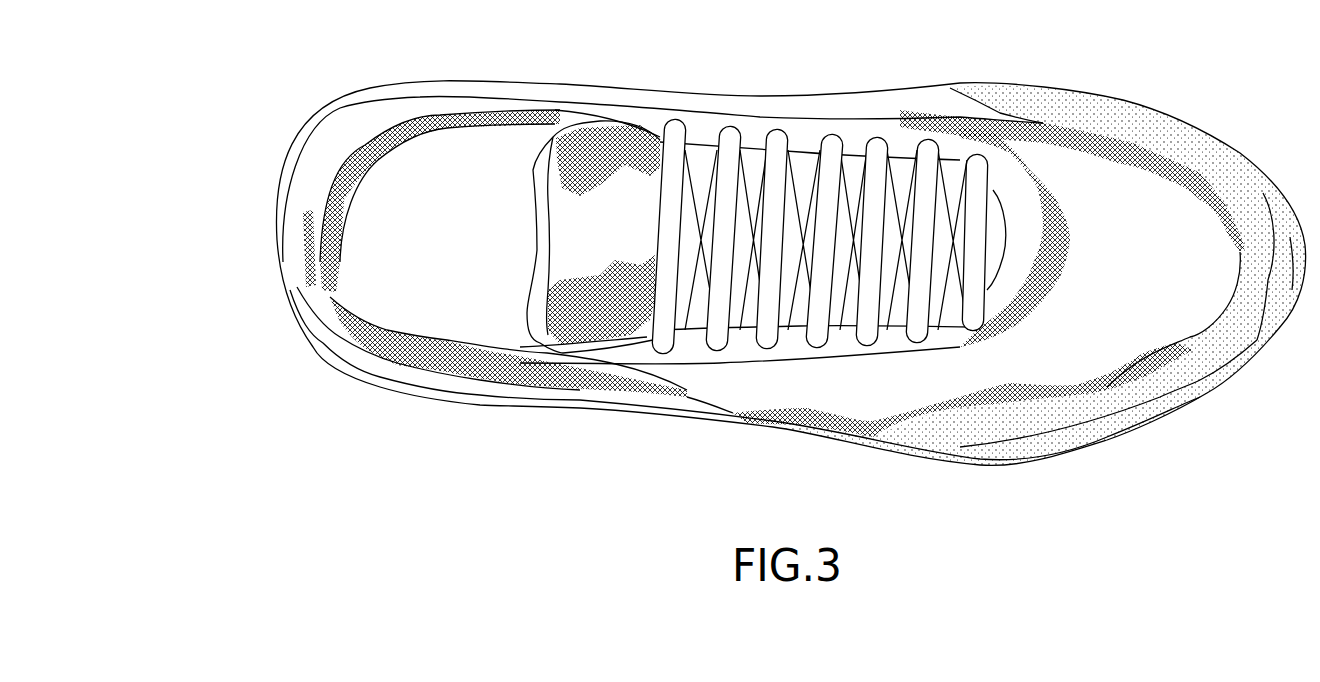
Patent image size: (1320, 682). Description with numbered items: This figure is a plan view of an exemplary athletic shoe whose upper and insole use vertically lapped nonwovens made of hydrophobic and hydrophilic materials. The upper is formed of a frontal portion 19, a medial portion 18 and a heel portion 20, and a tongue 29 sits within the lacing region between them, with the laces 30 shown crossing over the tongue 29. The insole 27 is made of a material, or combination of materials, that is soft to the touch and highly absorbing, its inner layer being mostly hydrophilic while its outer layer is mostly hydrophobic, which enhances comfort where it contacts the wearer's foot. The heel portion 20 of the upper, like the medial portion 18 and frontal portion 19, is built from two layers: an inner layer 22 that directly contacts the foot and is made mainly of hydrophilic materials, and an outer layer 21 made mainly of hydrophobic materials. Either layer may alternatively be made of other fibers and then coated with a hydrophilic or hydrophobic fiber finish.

The sole structure 18 is at (757, 398).
The heel region 19 is at (1105, 180).
The toe portion 20 is at (336, 224).
The first layer 21 is at (297, 250).
The second layer 22 is at (333, 278).
The forefoot region 27 is at (445, 211).
The tongue 29 is at (585, 187).
The lace 30 is at (795, 173).